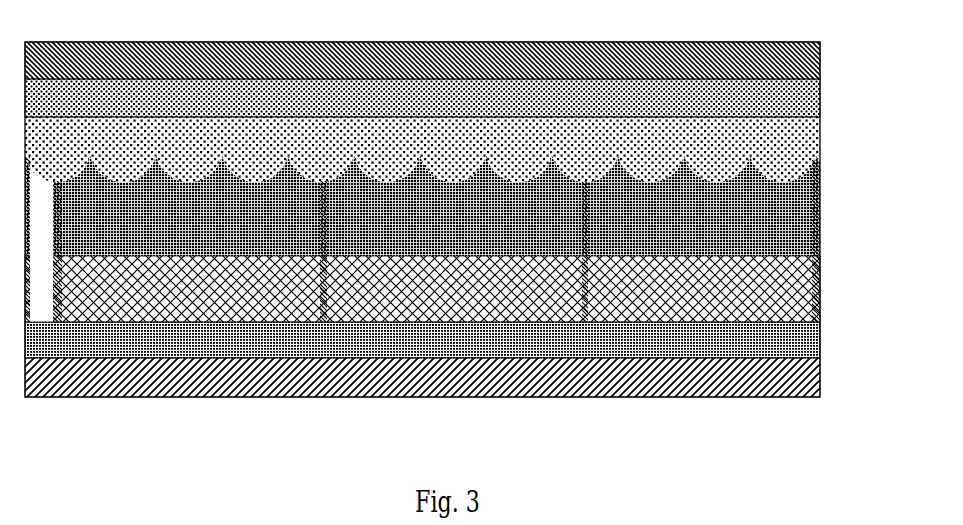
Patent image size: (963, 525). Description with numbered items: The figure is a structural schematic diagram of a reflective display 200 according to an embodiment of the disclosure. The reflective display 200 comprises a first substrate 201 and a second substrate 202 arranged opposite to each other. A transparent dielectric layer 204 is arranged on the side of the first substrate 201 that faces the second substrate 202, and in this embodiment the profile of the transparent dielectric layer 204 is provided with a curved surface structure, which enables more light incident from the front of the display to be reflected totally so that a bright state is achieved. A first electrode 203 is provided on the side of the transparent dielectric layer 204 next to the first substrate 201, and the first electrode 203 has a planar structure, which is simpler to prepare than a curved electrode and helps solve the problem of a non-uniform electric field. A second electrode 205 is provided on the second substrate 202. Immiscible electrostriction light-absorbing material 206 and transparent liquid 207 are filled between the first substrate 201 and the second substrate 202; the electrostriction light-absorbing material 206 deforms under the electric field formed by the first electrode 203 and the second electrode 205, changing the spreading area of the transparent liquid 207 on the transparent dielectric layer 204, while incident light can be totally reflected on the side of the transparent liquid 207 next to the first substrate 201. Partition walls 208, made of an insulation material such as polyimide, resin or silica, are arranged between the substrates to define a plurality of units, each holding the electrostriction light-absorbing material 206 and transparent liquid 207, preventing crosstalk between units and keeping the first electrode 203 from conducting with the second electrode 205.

The reflective display 200 is at (510, 417).
The first substrate 201 is at (783, 60).
The second substrate 202 is at (780, 377).
The first electrode 203 is at (780, 108).
The transparent dielectric layer 204 is at (780, 153).
The second electrode 205 is at (783, 328).
The electrostriction light-absorbing material 206 is at (820, 203).
The transparent liquid 207 is at (808, 317).
The partition walls 208 is at (820, 267).